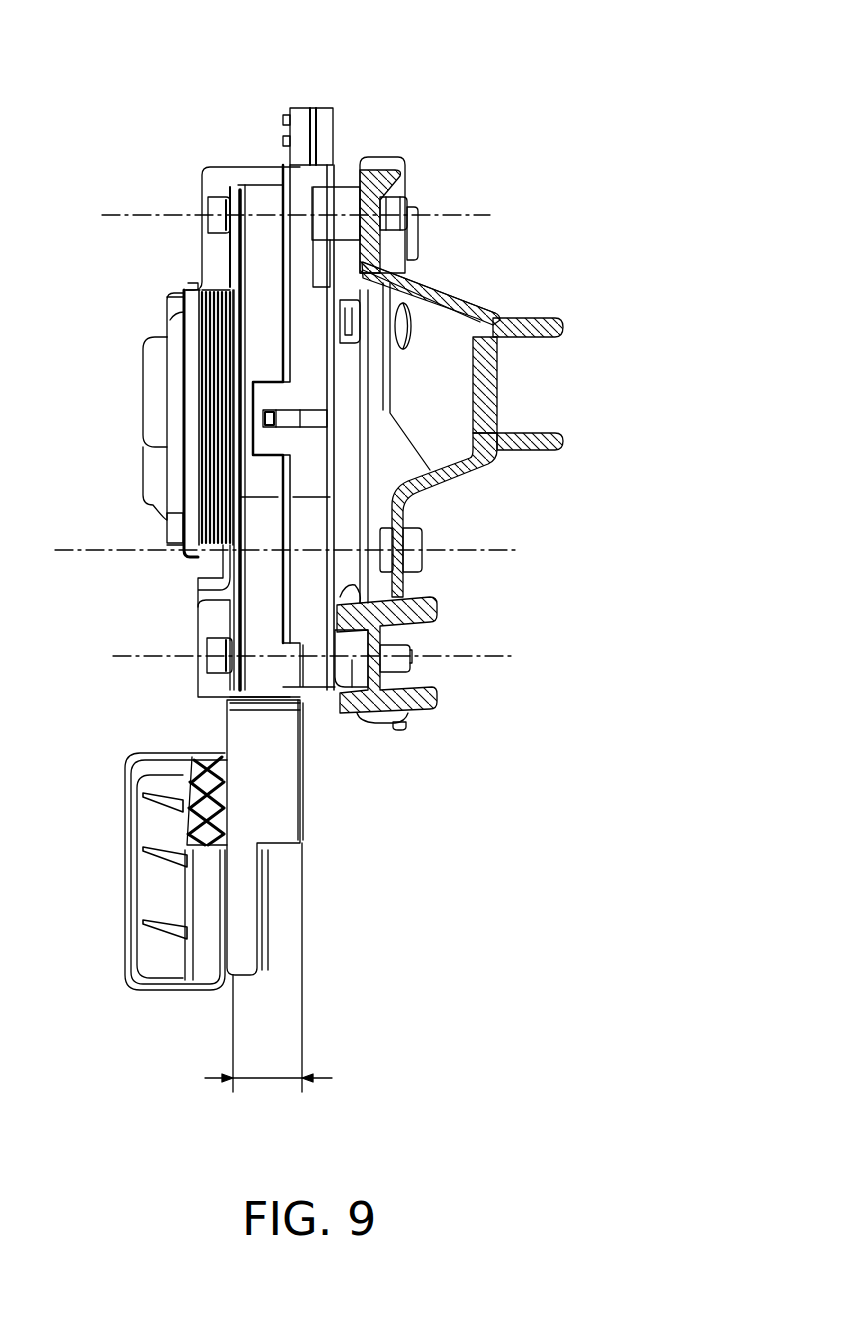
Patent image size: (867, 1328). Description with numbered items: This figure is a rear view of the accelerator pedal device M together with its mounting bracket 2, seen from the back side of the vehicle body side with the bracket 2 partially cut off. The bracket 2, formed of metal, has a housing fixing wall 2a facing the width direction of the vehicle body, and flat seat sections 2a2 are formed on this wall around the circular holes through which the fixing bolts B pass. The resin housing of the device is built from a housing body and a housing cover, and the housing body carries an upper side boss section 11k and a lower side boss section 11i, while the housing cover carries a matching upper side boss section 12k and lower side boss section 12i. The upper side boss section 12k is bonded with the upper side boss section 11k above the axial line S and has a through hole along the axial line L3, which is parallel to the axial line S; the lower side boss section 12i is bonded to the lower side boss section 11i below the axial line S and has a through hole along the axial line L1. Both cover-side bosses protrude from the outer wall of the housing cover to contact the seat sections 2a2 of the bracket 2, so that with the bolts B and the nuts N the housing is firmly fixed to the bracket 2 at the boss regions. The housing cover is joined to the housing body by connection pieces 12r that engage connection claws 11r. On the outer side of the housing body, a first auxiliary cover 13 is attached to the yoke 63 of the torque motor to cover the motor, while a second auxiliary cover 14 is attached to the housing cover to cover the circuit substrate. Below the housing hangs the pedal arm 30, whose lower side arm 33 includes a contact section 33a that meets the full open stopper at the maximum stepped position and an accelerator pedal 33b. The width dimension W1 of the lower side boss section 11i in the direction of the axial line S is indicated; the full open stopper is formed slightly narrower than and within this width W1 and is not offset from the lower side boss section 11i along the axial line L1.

The accelerator pedal device M is at (158, 72).
The upper side boss section 11k is at (256, 205).
The lower side boss section 11i is at (257, 665).
The connection claws 11r is at (262, 418).
The upper side boss section 12k is at (343, 193).
The lower side boss section 12i is at (350, 668).
The connection pieces 12r is at (255, 402).
The first auxiliary cover 13 is at (143, 485).
The second auxiliary cover 14 is at (357, 457).
The bracket 2 is at (530, 317).
The housing fixing wall 2a is at (437, 290).
The seat sections 2a2 is at (372, 200).
The bolts B is at (218, 200).
The nuts N is at (385, 200).
The yoke 63 is at (188, 288).
The pedal arm 30 is at (308, 832).
The lower side arm 33 is at (283, 765).
The contact section 33a is at (285, 697).
The accelerator pedal 33b is at (125, 798).
The axial line L1 is at (500, 656).
The axial line L3 is at (490, 215).
The axial line S is at (72, 550).
The width dimension W1 is at (268, 967).